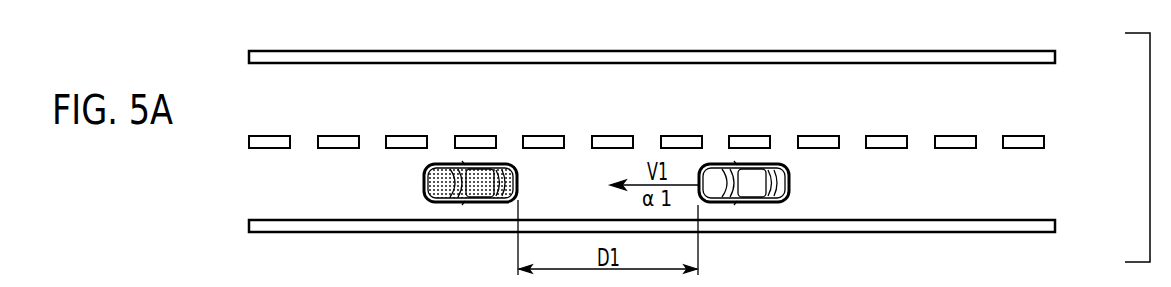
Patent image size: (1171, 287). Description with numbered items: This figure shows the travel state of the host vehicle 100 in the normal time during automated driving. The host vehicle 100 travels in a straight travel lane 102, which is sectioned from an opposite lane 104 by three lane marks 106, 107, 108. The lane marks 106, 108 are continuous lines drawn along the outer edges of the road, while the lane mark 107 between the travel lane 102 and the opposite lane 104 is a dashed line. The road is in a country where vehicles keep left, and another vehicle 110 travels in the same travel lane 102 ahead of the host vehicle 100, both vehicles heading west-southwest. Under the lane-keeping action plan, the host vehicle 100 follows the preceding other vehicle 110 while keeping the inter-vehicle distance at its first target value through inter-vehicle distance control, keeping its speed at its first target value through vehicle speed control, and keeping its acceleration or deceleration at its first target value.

The host vehicle 100 is at (749, 190).
The other vehicle 110 is at (474, 200).
The travel lane 102 is at (918, 193).
The opposite lane 104 is at (958, 88).
The lane mark 106 is at (1055, 226).
The lane mark 107 is at (1044, 142).
The lane mark 108 is at (1055, 57).